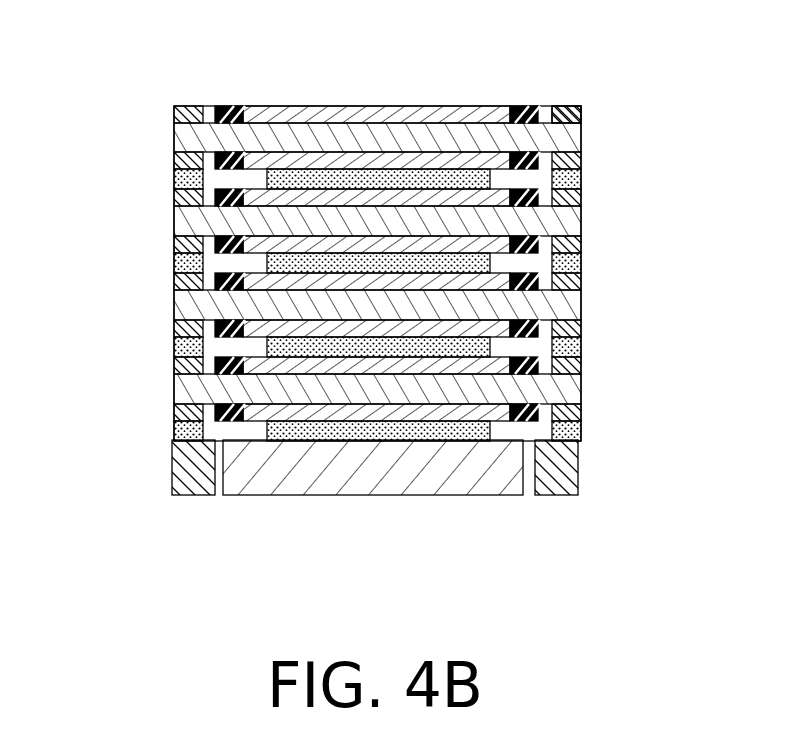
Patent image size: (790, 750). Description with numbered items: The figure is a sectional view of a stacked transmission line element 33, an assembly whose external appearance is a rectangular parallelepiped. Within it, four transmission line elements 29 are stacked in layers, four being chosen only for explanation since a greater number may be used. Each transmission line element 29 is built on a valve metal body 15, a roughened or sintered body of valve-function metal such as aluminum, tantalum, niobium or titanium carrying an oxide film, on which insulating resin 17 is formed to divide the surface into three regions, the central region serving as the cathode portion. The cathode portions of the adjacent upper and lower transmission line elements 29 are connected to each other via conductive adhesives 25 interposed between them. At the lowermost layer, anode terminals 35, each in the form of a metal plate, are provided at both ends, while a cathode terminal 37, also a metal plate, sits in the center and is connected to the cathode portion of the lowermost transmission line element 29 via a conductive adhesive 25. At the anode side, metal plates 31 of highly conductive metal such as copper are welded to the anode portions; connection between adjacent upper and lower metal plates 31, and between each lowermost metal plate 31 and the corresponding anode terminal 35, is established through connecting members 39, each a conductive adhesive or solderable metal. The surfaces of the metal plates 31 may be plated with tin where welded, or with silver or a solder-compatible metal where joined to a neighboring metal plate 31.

The valve metal body 15 is at (432, 135).
The insulating resin 17 is at (236, 106).
The conductive adhesive 25 is at (392, 258).
The transmission line element 29 is at (163, 138).
The metal plate 31 is at (582, 162).
The stacked transmission line element 33 is at (588, 86).
The anode terminal 35 is at (195, 487).
The cathode terminal 37 is at (297, 483).
The connecting member 39 is at (174, 182).